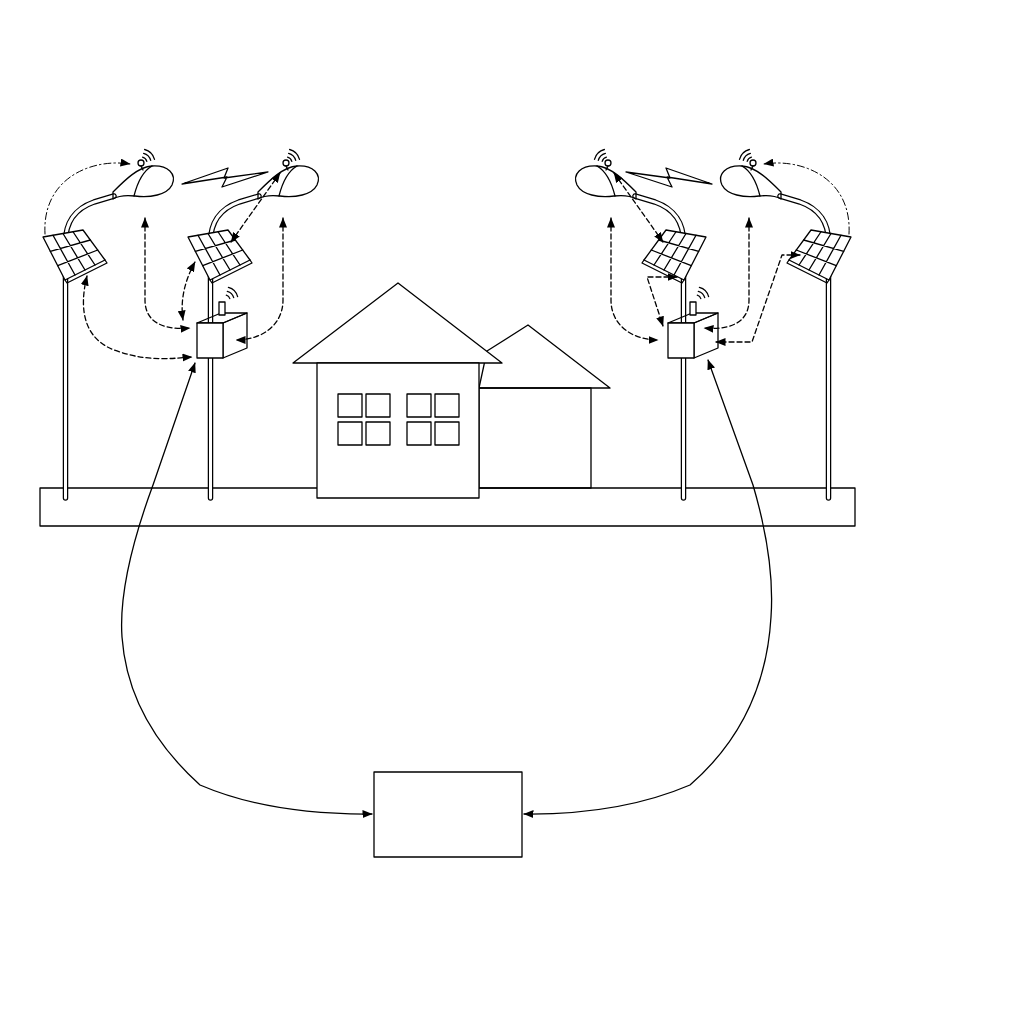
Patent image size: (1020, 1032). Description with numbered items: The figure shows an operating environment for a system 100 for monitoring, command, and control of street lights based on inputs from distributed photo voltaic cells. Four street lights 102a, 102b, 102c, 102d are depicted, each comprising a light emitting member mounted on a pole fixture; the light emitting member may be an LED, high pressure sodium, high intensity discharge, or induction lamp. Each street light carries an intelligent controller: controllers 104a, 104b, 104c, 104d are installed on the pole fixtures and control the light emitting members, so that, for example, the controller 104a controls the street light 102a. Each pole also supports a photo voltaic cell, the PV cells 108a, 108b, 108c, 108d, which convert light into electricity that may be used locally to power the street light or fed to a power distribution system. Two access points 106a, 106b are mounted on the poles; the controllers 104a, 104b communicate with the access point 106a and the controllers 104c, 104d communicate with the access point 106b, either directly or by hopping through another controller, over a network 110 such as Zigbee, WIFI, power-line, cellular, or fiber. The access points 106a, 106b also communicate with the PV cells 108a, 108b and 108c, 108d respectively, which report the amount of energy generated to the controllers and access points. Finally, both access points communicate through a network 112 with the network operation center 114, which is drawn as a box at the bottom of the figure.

The system 100 is at (255, 58).
The street light 102a is at (129, 191).
The street light 102b is at (274, 191).
The street light 102c is at (618, 196).
The street light 102d is at (762, 196).
The controller 104a is at (139, 160).
The controller 104b is at (284, 160).
The controller 104c is at (607, 160).
The controller 104d is at (754, 160).
The access point 106a is at (217, 360).
The access point 106b is at (672, 360).
The photo voltaic (PV) cell 108a is at (100, 262).
The photo voltaic (PV) cell 108b is at (248, 258).
The photo voltaic (PV) cell 108c is at (650, 258).
The photo voltaic (PV) cell 108d is at (837, 262).
The network 110 is at (147, 305).
The network 112 is at (185, 776).
The network operation center (NOC) 114 is at (400, 771).